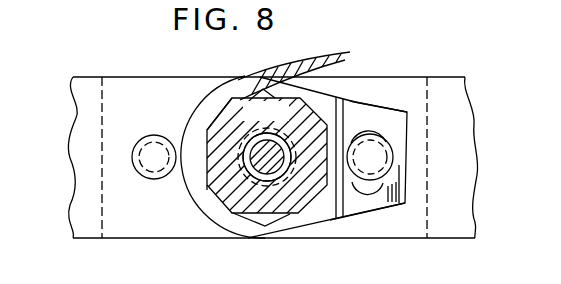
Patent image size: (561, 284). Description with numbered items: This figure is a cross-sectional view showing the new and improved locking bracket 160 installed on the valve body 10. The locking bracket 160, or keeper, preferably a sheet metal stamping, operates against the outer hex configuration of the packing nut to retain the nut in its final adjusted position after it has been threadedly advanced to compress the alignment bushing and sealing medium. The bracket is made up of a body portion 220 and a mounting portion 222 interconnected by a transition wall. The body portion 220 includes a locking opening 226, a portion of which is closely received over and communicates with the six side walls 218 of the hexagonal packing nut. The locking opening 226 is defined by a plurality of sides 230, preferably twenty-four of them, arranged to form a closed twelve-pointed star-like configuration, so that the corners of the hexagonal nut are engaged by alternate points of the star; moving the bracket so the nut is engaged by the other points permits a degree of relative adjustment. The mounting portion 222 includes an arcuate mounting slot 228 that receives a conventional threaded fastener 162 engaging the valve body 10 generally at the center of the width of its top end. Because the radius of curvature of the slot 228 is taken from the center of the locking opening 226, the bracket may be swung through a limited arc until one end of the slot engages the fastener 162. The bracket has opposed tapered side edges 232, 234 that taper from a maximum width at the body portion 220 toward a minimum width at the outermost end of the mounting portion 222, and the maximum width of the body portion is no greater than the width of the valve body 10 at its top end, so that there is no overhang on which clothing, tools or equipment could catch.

The valve body 10 is at (125, 243).
The locking bracket 160 is at (321, 224).
The mechanical fastener 162 is at (397, 158).
The side walls 218 is at (207, 186).
The body portion 220 is at (217, 92).
The mounting portion 222 is at (383, 110).
The locking opening 226 is at (209, 126).
The arcuate mounting slot 228 is at (373, 190).
The sides 230 is at (312, 66).
The tapered side edge 232 is at (356, 102).
The tapered side edge 234 is at (340, 219).